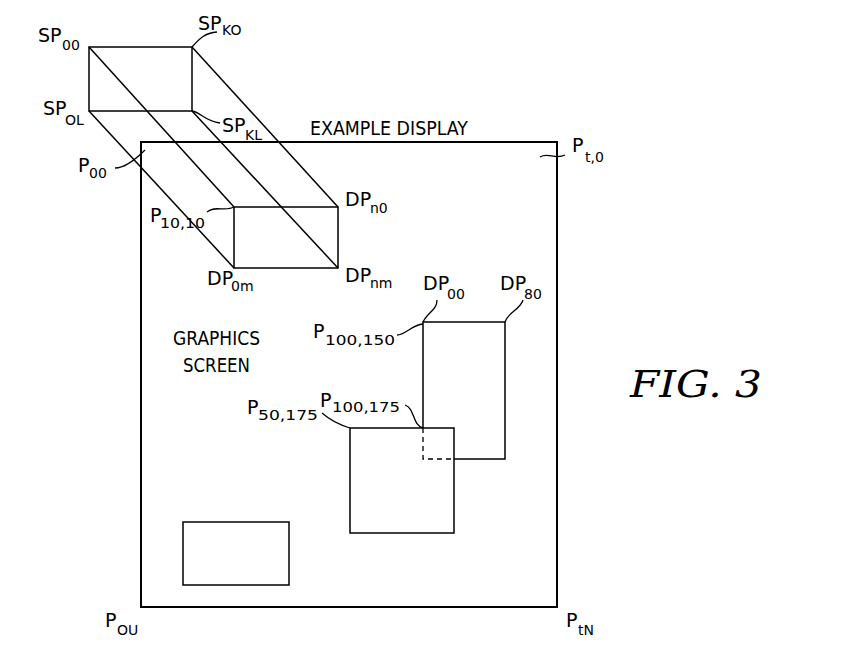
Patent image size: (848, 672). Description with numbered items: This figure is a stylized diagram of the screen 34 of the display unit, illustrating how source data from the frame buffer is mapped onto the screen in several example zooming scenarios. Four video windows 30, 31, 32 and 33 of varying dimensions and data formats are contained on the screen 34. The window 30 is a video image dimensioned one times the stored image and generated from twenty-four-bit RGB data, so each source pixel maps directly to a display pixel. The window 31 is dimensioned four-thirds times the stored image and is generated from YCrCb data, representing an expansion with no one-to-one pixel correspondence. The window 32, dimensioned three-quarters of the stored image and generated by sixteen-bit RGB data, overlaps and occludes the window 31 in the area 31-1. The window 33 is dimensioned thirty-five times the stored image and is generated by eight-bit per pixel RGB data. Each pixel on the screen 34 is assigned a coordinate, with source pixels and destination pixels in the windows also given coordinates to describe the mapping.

The video window 30 is at (285, 262).
The video window 31 is at (497, 345).
The occluded area 31-1 is at (443, 450).
The video window 32 is at (445, 522).
The video window 33 is at (280, 572).
The screen 34 is at (562, 225).